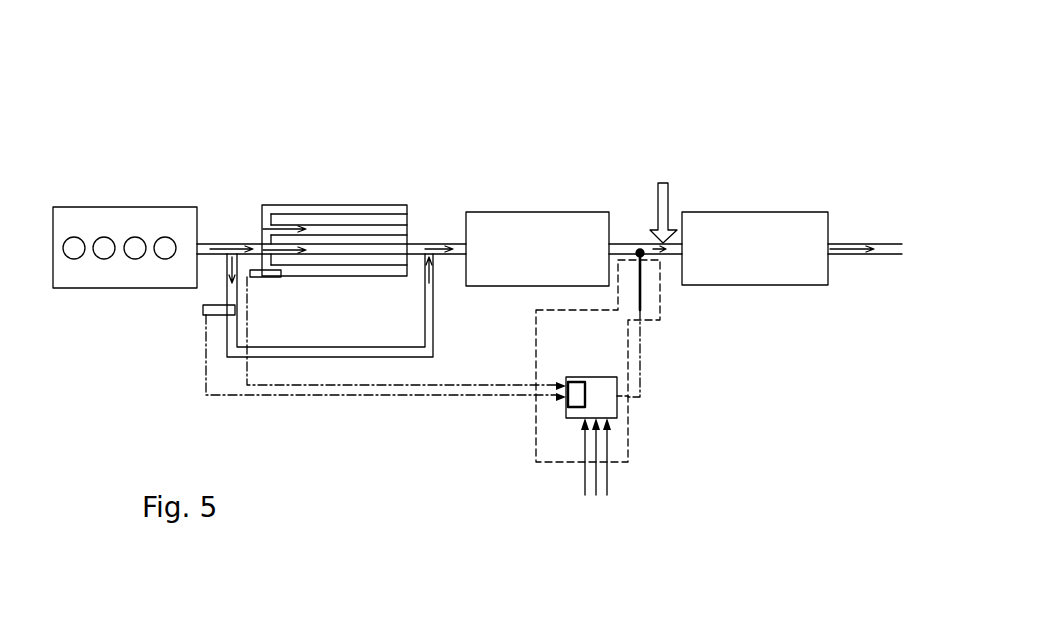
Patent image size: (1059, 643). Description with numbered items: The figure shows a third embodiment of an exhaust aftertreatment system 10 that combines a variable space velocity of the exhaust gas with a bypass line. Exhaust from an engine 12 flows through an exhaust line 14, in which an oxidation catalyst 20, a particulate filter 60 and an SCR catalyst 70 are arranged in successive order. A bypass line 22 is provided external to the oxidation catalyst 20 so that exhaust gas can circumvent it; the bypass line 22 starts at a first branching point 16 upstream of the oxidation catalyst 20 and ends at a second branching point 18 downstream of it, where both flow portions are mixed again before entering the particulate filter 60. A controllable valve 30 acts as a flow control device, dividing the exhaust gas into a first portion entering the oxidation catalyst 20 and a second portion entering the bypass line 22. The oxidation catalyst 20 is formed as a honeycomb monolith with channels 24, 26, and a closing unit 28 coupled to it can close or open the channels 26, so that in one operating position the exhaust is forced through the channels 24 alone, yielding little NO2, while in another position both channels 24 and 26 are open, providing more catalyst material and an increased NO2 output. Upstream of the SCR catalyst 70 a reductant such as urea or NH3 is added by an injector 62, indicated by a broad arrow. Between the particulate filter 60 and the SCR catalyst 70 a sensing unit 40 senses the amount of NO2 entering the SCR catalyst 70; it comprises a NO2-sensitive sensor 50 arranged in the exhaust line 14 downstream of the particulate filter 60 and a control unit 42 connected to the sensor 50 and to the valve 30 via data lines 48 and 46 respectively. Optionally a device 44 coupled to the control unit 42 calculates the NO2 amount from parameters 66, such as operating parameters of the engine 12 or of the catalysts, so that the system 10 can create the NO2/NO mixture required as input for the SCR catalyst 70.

The exhaust aftertreatment system 10 is at (582, 111).
The engine 12 is at (125, 207).
The exhaust line 14 is at (208, 243).
The first branching point 16 is at (237, 242).
The second branching point 18 is at (431, 240).
The oxidation catalyst 20 is at (337, 206).
The bypass line 22 is at (319, 354).
The channels 24 is at (352, 250).
The channels 26 is at (368, 215).
The closing unit 28 is at (263, 270).
The controllable valve 30 is at (204, 313).
The sensing unit 40 is at (536, 443).
The control unit 42 is at (590, 377).
The device 44 is at (562, 398).
The data line 46 is at (328, 405).
The data line 48 is at (640, 340).
The NO2-sensitive sensor 50 is at (642, 285).
The particulate filter 60 is at (537, 212).
The injector 62 is at (660, 183).
The parameters 66 is at (603, 450).
The SCR catalyst 70 is at (755, 212).